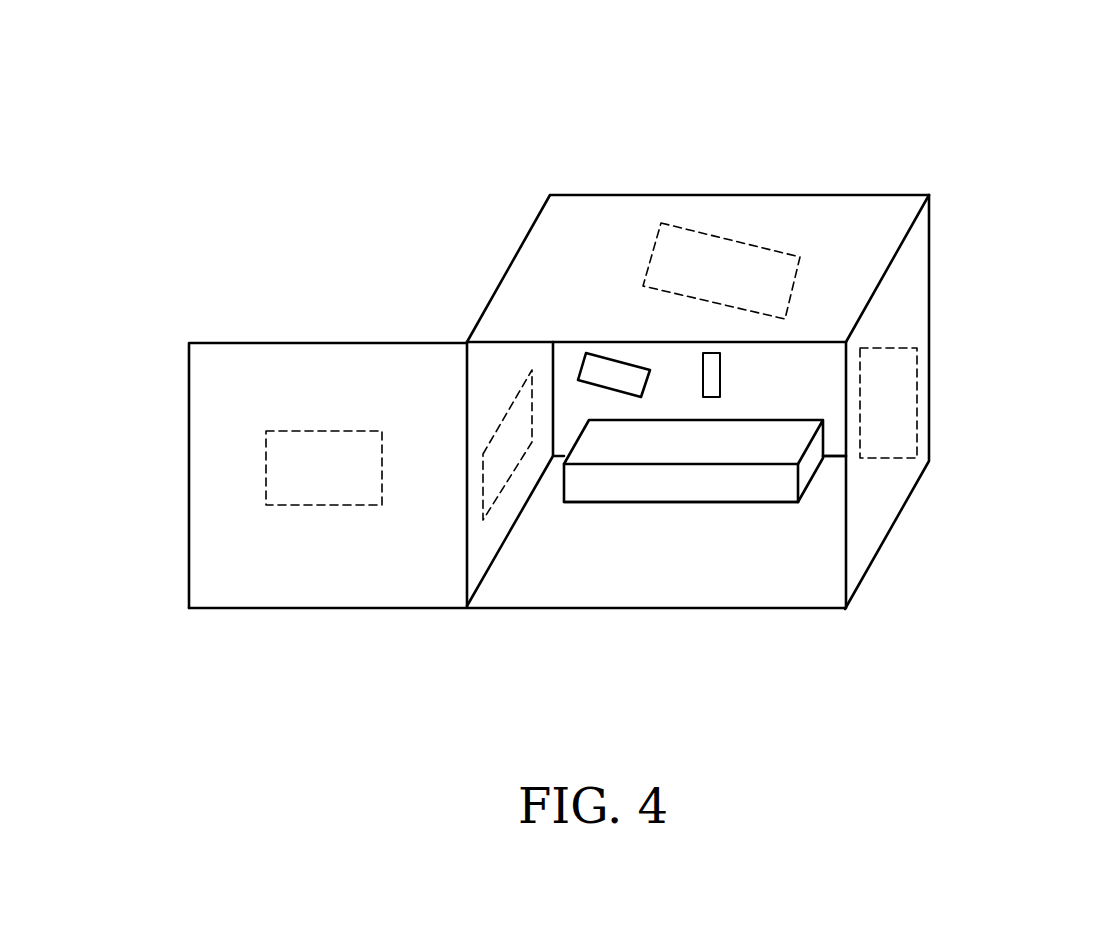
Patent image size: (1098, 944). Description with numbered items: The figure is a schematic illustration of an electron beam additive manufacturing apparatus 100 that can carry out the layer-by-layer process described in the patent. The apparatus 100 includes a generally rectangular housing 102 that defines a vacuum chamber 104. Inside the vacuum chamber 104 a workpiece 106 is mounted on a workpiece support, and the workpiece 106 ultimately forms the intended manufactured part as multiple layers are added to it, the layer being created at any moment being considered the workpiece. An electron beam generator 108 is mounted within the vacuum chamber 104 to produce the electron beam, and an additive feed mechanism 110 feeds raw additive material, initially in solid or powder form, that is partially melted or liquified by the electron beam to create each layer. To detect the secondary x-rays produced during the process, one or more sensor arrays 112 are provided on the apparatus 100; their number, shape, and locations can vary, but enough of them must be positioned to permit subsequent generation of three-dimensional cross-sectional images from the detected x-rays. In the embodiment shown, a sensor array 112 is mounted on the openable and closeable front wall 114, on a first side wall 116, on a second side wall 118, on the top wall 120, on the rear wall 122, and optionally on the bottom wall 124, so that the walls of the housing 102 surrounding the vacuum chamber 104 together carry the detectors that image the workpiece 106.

The apparatus 100 is at (1013, 153).
The housing 102 is at (870, 520).
The vacuum chamber 104 is at (735, 583).
The workpiece 106 is at (597, 443).
The electron beam generator 108 is at (722, 372).
The additive feed mechanism 110 is at (597, 370).
The sensor array 112 is at (731, 237).
The front wall 114 is at (223, 380).
The first side wall 116 is at (480, 540).
The second side wall 118 is at (920, 285).
The top wall 120 is at (585, 233).
The rear wall 122 is at (836, 397).
The bottom wall 124 is at (647, 590).